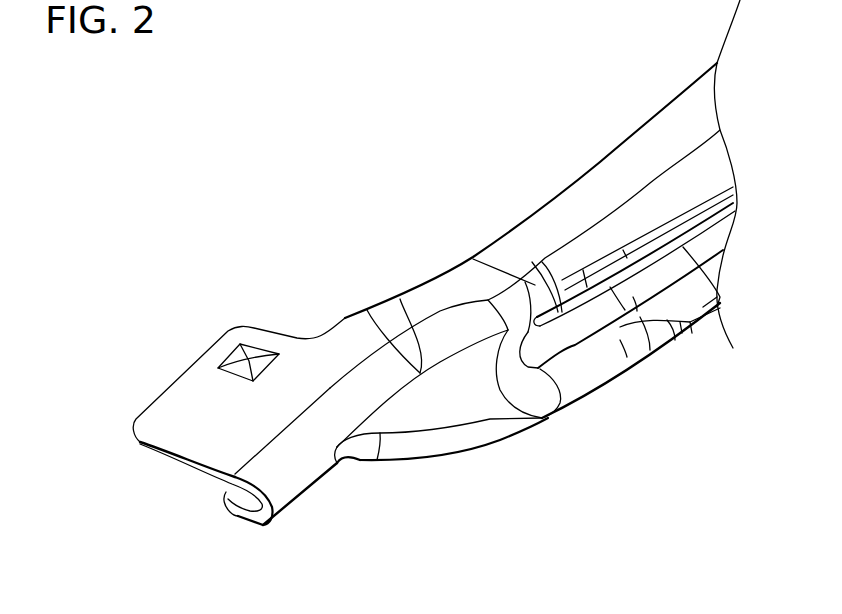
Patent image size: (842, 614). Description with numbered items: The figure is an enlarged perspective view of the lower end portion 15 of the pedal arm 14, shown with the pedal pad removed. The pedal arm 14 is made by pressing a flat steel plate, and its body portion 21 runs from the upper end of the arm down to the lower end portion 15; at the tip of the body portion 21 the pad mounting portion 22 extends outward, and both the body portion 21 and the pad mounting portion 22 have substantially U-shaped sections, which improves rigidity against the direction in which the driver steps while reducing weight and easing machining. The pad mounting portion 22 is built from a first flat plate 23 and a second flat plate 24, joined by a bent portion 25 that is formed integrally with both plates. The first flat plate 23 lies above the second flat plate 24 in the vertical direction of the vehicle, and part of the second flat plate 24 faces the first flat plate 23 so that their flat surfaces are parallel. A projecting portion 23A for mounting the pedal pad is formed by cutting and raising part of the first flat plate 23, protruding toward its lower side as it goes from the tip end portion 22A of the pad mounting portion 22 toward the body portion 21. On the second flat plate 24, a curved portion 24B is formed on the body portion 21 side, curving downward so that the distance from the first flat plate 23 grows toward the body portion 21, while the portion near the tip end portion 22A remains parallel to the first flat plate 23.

The pedal arm 14 is at (593, 165).
The lower end portion 15 is at (413, 303).
The body portion 21 is at (573, 358).
The pad mounting portion 22 is at (238, 315).
The tip end portion 22A is at (152, 447).
The first flat plate 23 is at (181, 410).
The projecting portion 23A is at (240, 366).
The second flat plate 24 is at (237, 492).
The curved portion 24B is at (358, 448).
The bent portion 25 is at (300, 478).